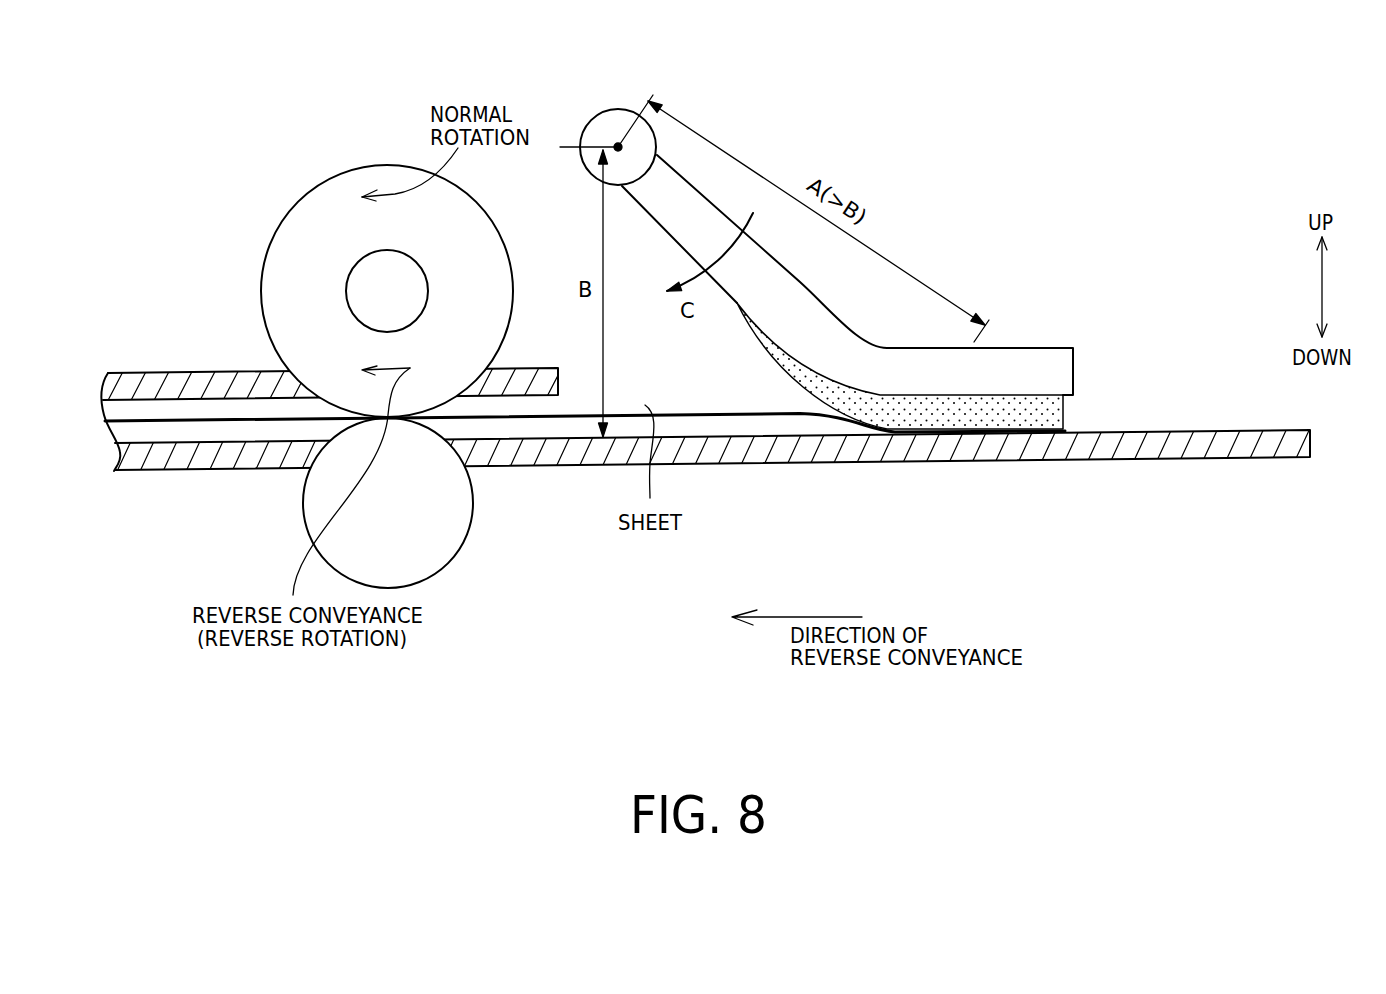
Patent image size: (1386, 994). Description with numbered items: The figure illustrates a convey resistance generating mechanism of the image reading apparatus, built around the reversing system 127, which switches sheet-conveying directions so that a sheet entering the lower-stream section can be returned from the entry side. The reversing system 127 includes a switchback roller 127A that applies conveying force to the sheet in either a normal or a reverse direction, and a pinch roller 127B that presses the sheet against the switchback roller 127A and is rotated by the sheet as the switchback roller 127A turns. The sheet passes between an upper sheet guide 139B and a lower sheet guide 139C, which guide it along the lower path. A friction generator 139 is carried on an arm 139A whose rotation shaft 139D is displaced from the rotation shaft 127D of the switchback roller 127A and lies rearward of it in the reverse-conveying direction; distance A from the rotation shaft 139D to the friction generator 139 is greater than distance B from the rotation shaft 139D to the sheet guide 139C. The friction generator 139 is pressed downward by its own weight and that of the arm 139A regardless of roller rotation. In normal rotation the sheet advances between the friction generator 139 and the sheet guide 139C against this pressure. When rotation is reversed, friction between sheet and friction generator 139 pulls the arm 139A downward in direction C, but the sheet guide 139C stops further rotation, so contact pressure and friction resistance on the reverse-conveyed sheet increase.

The reversing system 127 is at (336, 364).
The switchback roller 127A is at (383, 163).
The pinch roller 127B is at (447, 567).
The rotation shaft 127D is at (373, 270).
The friction generator 139 is at (1030, 413).
The arm 139A is at (1035, 365).
The sheet guide 139B is at (155, 378).
The sheet guide 139C is at (178, 470).
The rotation shaft 139D is at (613, 120).